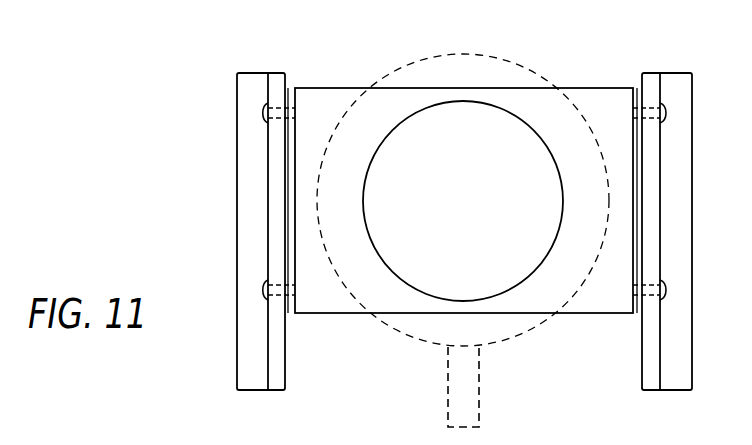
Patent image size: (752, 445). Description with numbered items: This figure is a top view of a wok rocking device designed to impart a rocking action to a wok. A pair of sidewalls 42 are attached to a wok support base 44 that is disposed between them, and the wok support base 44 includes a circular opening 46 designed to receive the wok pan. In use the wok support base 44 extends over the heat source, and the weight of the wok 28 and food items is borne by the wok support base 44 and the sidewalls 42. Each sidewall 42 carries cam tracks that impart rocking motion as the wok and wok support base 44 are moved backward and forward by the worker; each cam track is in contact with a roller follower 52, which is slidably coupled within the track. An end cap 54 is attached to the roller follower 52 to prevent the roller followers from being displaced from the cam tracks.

The wok 28 is at (383, 323).
The sidewalls 42 is at (276, 201).
The wok support base 44 is at (588, 306).
The circular opening 46 is at (502, 116).
The roller follower 52 is at (291, 88).
The end cap 54 is at (262, 112).